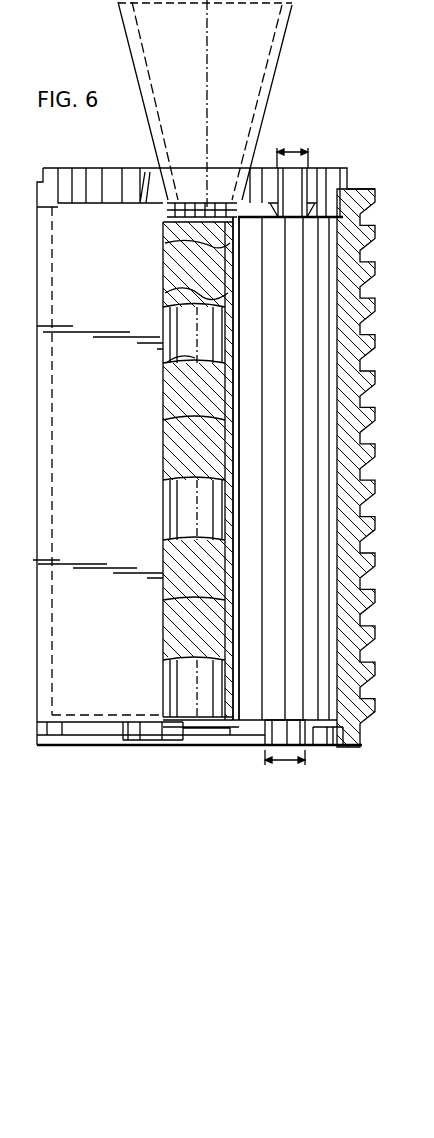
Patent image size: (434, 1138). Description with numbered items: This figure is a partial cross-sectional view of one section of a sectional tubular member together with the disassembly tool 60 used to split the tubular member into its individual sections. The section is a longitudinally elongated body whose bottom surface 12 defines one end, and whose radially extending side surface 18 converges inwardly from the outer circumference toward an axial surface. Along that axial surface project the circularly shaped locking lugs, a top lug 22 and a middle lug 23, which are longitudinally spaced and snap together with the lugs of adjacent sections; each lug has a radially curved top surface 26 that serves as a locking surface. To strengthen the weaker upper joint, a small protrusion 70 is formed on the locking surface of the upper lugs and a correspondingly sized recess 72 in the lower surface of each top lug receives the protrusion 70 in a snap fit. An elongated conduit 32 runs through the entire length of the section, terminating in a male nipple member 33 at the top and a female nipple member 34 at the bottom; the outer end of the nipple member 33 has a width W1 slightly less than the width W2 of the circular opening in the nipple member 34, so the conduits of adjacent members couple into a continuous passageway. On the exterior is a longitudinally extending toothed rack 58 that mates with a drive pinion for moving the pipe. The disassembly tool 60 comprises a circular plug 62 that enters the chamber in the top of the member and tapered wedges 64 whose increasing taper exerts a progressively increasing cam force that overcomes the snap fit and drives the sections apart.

The bottom surface 12 is at (237, 722).
The side surface 18 is at (323, 207).
The locking lug 22 is at (210, 282).
The locking lug 23 is at (217, 398).
The top surface 26 is at (213, 247).
The conduit 32 is at (298, 397).
The nipple member 33 is at (312, 187).
The nipple member 34 is at (260, 732).
The toothed rack 58 is at (375, 266).
The disassembly tool 60 is at (290, 40).
The plug 62 is at (177, 215).
The tapered wedge 64 is at (129, 45).
The protrusion 70 is at (187, 357).
The recess 72 is at (175, 288).
The width W1 is at (297, 152).
The width W2 is at (290, 762).